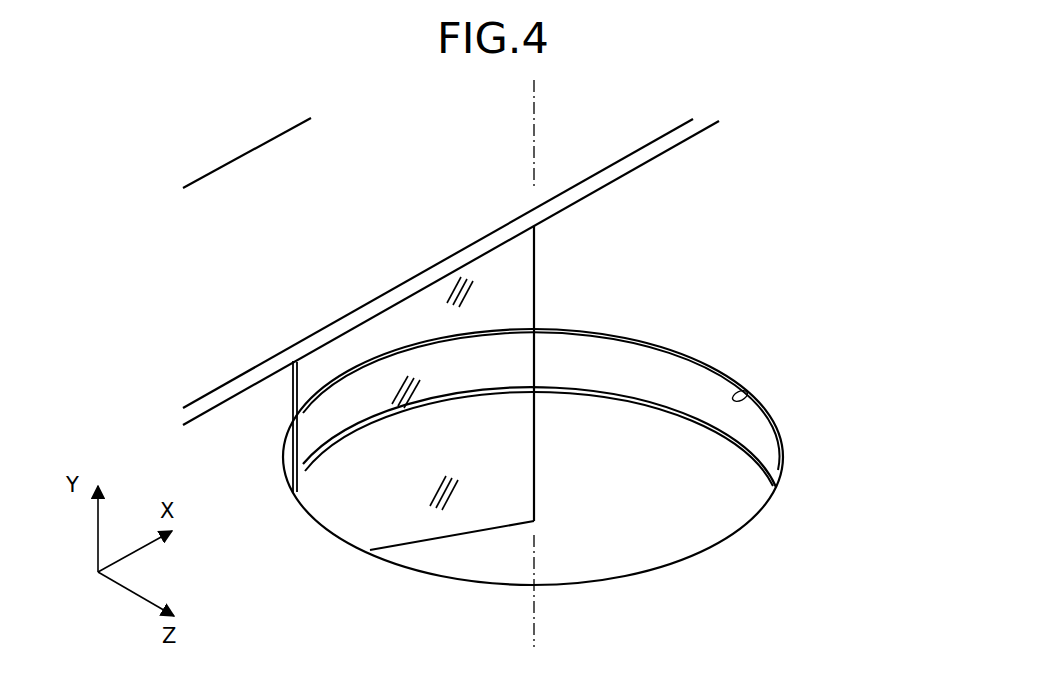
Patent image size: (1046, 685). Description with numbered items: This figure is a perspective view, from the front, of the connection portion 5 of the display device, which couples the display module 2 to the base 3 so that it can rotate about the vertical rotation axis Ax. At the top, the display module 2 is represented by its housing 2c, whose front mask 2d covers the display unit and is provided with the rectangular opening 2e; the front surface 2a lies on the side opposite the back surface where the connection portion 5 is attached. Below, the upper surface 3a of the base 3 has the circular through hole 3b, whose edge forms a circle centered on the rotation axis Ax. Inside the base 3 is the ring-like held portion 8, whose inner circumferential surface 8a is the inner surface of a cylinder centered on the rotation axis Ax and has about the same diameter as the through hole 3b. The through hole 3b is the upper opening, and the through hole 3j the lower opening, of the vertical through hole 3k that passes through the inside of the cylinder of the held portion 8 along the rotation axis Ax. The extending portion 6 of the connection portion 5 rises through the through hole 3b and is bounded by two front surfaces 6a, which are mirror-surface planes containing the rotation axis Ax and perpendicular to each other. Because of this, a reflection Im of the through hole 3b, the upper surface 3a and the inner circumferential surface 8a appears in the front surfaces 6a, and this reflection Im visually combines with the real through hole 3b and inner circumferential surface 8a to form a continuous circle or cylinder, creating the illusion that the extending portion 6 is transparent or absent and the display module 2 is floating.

The display module 2 is at (468, 271).
The front surface 2a is at (610, 140).
The front mask 2d is at (465, 263).
The housing 2c is at (706, 135).
The opening 2e is at (235, 163).
The base 3 is at (563, 428).
The upper surface 3a is at (758, 347).
The through hole 3b is at (748, 399).
The through hole 3j is at (732, 450).
The through hole 3k is at (691, 331).
The connection portion 5 is at (192, 426).
The extending portion 6 is at (288, 395).
The front surfaces 6a is at (407, 520).
The held portion 8 is at (603, 437).
The inner circumferential surface 8a is at (757, 444).
The rotation axis Ax is at (535, 98).
The reflection Im is at (342, 462).